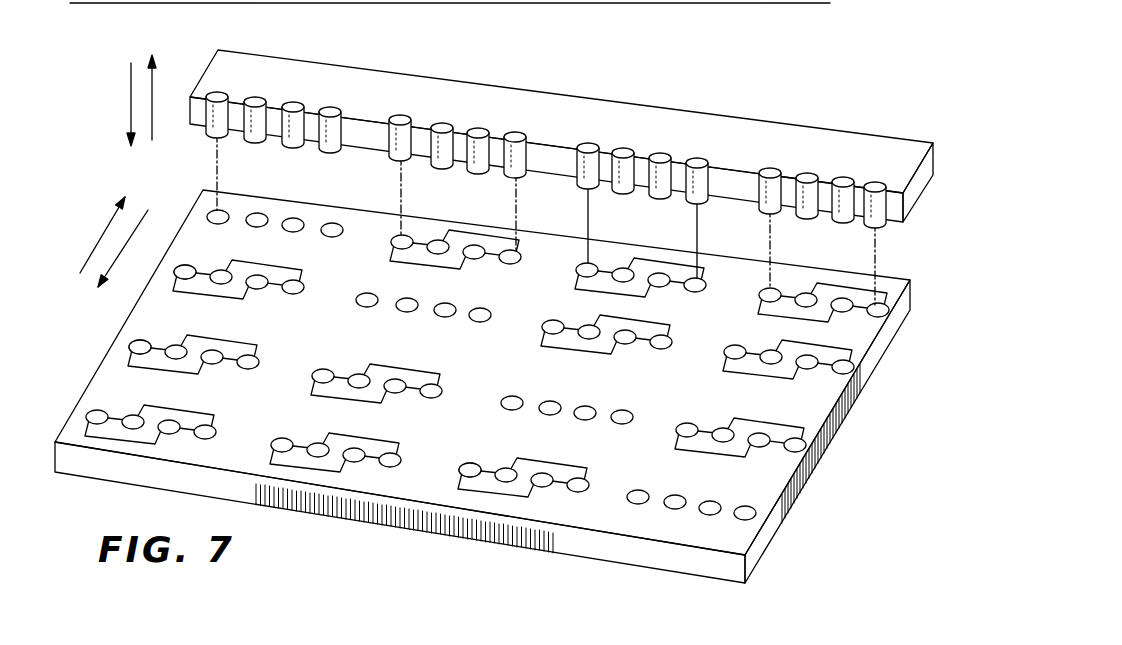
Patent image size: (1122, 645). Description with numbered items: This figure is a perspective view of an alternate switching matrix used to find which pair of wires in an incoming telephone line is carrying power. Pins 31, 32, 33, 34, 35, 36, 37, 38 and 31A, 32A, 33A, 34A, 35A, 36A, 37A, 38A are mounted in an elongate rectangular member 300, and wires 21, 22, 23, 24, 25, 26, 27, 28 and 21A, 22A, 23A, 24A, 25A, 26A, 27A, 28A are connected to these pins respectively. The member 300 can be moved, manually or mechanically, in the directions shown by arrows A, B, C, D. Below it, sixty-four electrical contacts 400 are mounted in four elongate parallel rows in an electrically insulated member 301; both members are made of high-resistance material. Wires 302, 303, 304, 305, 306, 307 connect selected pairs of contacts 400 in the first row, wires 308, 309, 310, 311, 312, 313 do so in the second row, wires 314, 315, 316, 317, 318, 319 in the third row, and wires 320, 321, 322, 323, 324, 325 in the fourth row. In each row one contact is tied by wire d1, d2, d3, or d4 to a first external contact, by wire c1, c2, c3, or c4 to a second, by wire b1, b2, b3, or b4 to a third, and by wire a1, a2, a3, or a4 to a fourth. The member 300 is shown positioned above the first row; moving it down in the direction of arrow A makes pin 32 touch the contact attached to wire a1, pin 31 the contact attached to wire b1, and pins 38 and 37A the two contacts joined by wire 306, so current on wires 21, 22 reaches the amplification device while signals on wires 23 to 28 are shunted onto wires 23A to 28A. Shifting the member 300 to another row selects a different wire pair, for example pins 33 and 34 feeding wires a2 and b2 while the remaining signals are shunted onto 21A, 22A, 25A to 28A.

The wire 21 is at (335, 76).
The wire 21A is at (299, 73).
The wire 22 is at (376, 82).
The wire 22A is at (254, 71).
The wire 23 is at (561, 106).
The wire 23A is at (444, 86).
The wire 24 is at (521, 104).
The wire 24A is at (493, 90).
The wire 25 is at (732, 130).
The wire 25A is at (617, 111).
The wire 26 is at (696, 127).
The wire 26A is at (657, 118).
The wire 27 is at (877, 145).
The wire 27A is at (833, 135).
The wire 28 is at (912, 153).
The wire 28A is at (785, 138).
The pin 31 is at (297, 103).
The pin 31A is at (259, 98).
The pin 32 is at (334, 108).
The pin 32A is at (221, 94).
The pin 33 is at (516, 132).
The pin 33A is at (398, 109).
The pin 34 is at (479, 128).
The pin 34A is at (443, 123).
The pin 35 is at (697, 158).
The pin 35A is at (587, 143).
The pin 36 is at (660, 153).
The pin 36A is at (622, 148).
The pin 37 is at (843, 177).
The pin 37A is at (806, 173).
The pin 38 is at (876, 182).
The pin 38A is at (768, 168).
The elongate rectangular member 300 is at (587, 116).
The electrically insulated member 301 is at (905, 290).
The wire 302 is at (434, 230).
The wire 303 is at (389, 261).
The wire 304 is at (622, 263).
The wire 305 is at (576, 290).
The wire 306 is at (836, 288).
The wire 307 is at (758, 314).
The wire 308 is at (255, 278).
The wire 309 is at (243, 299).
The wire 310 is at (616, 340).
The wire 311 is at (611, 354).
The wire 312 is at (824, 364).
The wire 313 is at (724, 371).
The wire 314 is at (193, 350).
The wire 315 is at (198, 374).
The wire 316 is at (376, 379).
The wire 317 is at (312, 395).
The wire 318 is at (717, 426).
The wire 319 is at (675, 449).
The wire 320 is at (176, 431).
The wire 321 is at (155, 444).
The wire 322 is at (351, 460).
The wire 323 is at (340, 472).
The wire 324 is at (523, 481).
The wire 325 is at (528, 497).
The electrical contact 400 is at (183, 265).
The wire a1 is at (340, 224).
The wire b1 is at (301, 219).
The wire c1 is at (265, 214).
The wire d1 is at (226, 210).
The wire a2 is at (488, 308).
The wire b2 is at (475, 283).
The wire c2 is at (438, 280).
The wire d2 is at (384, 286).
The wire a3 is at (630, 410).
The wire b3 is at (593, 406).
The wire c3 is at (558, 401).
The wire d3 is at (530, 385).
The wire a4 is at (753, 506).
The wire b4 is at (740, 481).
The wire c4 is at (705, 475).
The wire d4 is at (655, 482).
The arrow A is at (128, 100).
The arrow B is at (152, 115).
The arrow C is at (107, 226).
The arrow D is at (122, 258).